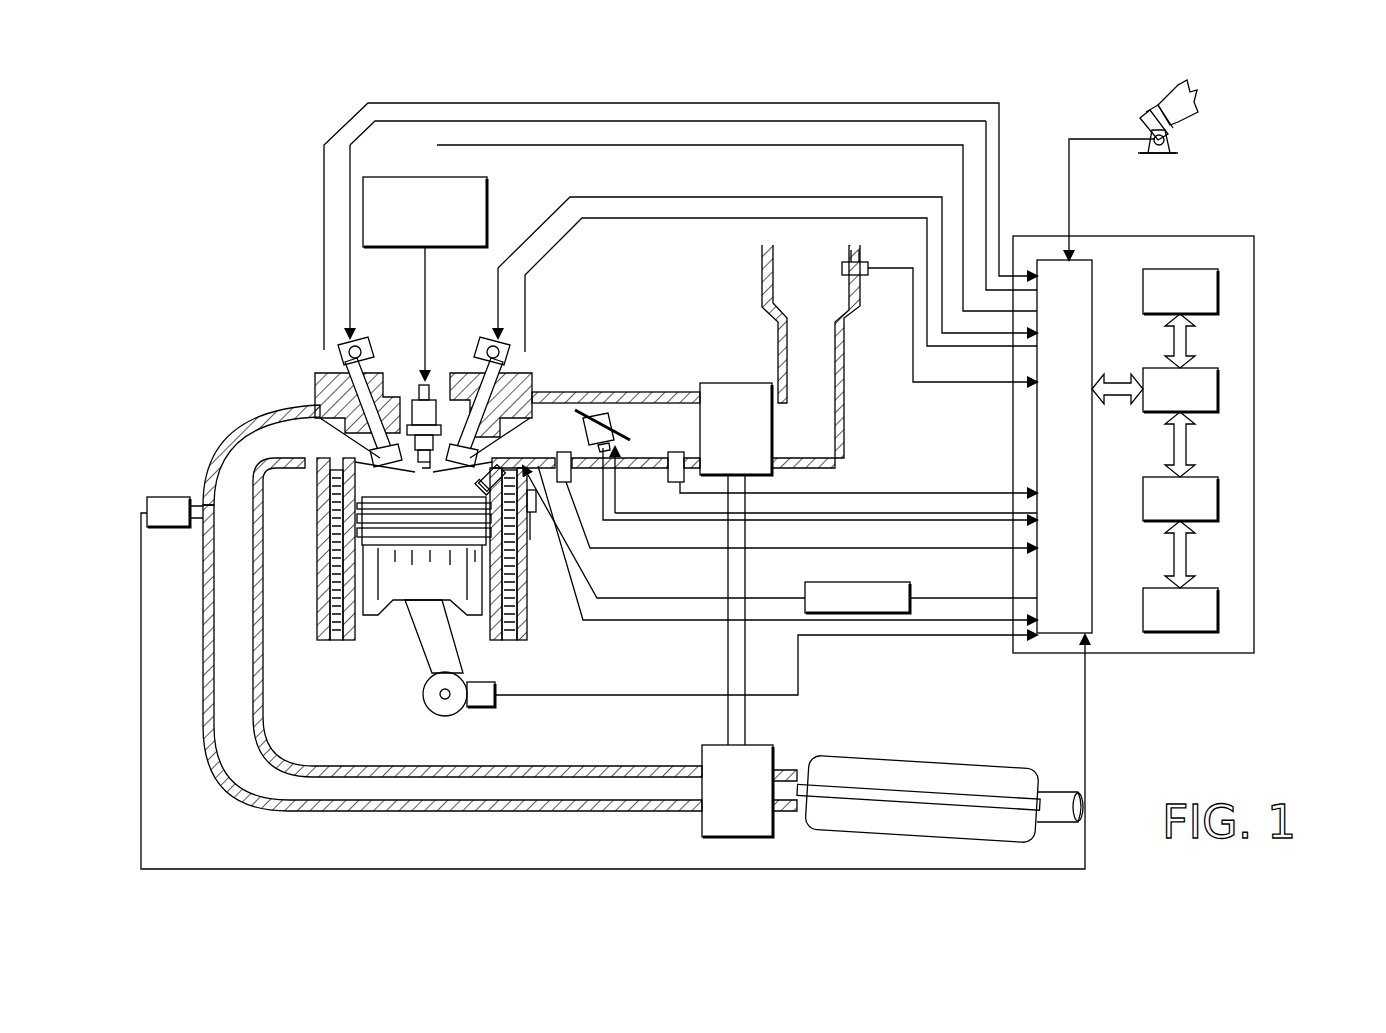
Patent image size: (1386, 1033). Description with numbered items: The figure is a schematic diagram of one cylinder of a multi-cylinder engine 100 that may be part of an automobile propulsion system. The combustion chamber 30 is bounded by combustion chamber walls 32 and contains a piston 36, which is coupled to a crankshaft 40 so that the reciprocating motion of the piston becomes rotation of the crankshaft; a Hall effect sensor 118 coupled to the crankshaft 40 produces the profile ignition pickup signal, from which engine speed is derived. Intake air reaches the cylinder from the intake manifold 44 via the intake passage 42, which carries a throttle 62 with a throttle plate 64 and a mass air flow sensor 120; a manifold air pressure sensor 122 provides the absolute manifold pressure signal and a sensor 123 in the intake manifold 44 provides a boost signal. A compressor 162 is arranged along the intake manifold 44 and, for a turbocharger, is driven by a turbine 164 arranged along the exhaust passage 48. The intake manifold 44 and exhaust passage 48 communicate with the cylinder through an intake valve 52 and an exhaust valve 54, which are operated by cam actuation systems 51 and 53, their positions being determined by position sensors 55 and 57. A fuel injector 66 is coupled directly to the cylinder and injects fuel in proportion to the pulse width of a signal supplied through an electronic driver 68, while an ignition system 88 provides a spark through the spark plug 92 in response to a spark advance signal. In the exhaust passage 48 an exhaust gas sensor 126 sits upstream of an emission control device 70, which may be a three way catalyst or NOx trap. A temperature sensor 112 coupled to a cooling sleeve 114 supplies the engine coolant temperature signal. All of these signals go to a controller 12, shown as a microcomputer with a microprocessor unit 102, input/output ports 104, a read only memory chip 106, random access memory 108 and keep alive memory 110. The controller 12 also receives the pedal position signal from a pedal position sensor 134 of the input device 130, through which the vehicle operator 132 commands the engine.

The engine 100 is at (247, 322).
The controller 12 is at (1243, 236).
The input/output ports 104 is at (1095, 268).
The read only memory chip 106 is at (1220, 290).
The microprocessor unit 102 is at (1220, 392).
The random access memory 108 is at (1220, 498).
The keep alive memory 110 is at (1220, 610).
The ignition system 88 is at (380, 177).
The electronic driver 68 is at (840, 582).
The input device 130 is at (1138, 118).
The vehicle operator 132 is at (1190, 100).
The pedal position sensor 134 is at (1178, 140).
The intake passage 42 is at (822, 299).
The mass air flow sensor 120 is at (865, 262).
The compressor 162 is at (723, 383).
The turbine 164 is at (702, 830).
The emission control device 70 is at (990, 768).
The exhaust passage 48 is at (295, 456).
The exhaust gas sensor 126 is at (147, 500).
The exhaust valve 54 is at (383, 457).
The intake valve 52 is at (440, 455).
The position sensor 57 is at (338, 350).
The cam actuation system 53 is at (355, 343).
The position sensor 55 is at (510, 360).
The cam actuation system 51 is at (490, 340).
The spark plug 92 is at (418, 410).
The combustion chamber 30 is at (370, 553).
The intake manifold 44 is at (676, 444).
The throttle 62 is at (607, 418).
The throttle plate 64 is at (593, 412).
The manifold air pressure sensor 122 is at (570, 482).
The sensor 123 is at (676, 482).
The fuel injector 66 is at (495, 472).
The temperature sensor 112 is at (537, 515).
The cooling sleeve 114 is at (527, 540).
The piston 36 is at (407, 583).
The combustion chamber walls 32 is at (360, 622).
The crankshaft 40 is at (430, 718).
The Hall effect sensor 118 is at (490, 707).